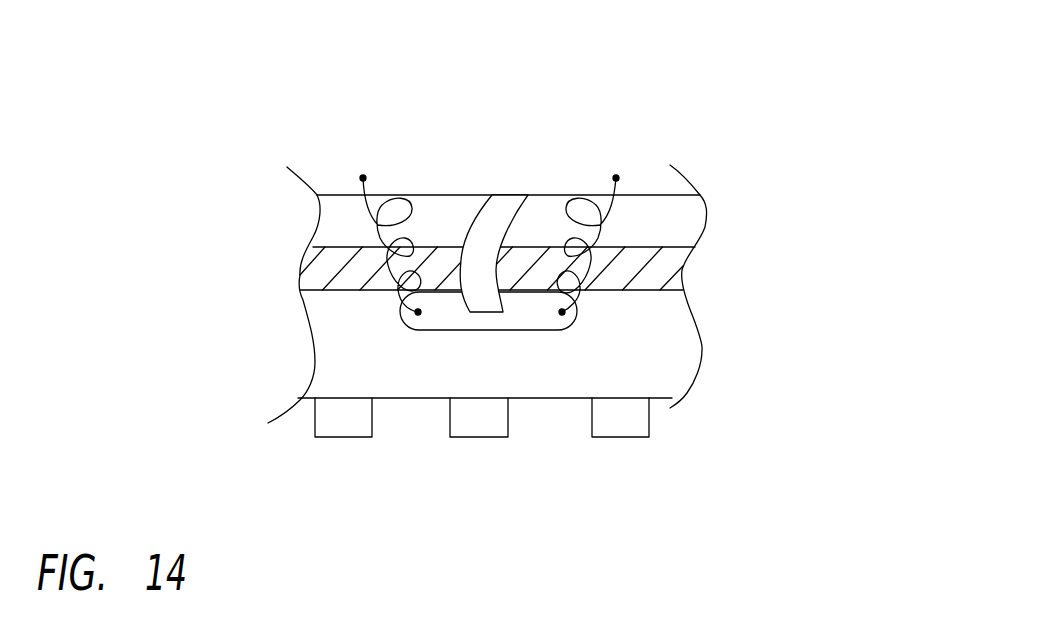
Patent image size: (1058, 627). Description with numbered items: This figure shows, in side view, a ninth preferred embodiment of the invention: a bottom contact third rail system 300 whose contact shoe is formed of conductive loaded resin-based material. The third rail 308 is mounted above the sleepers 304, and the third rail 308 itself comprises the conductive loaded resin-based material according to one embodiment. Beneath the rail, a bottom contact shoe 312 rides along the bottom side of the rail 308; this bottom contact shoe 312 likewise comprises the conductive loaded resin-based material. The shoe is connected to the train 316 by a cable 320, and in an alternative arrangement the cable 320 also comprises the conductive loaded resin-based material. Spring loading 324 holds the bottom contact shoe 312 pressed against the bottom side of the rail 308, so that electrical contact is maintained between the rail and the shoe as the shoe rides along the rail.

The bottom contact third rail system 300 is at (724, 38).
The sleepers 304 is at (620, 426).
The third rail 308 is at (300, 275).
The bottom contact shoe 312 is at (430, 323).
The train 316 is at (376, 144).
The cable 320 is at (498, 208).
The spring loading 324 is at (600, 232).